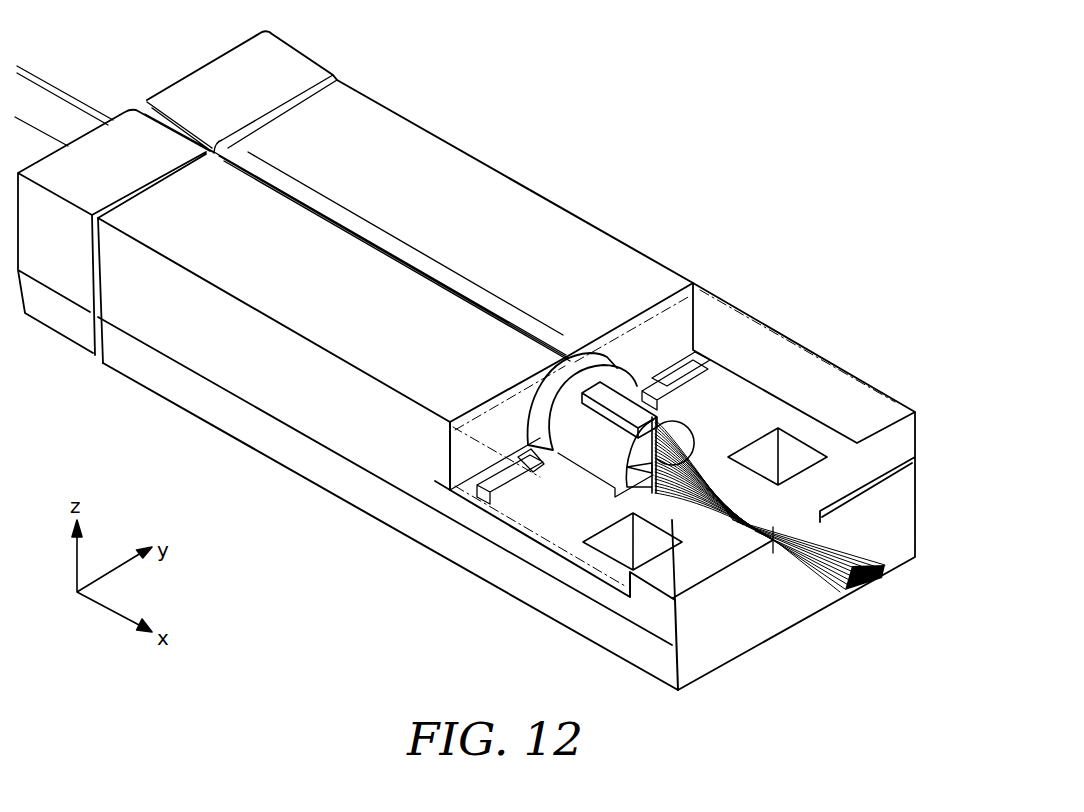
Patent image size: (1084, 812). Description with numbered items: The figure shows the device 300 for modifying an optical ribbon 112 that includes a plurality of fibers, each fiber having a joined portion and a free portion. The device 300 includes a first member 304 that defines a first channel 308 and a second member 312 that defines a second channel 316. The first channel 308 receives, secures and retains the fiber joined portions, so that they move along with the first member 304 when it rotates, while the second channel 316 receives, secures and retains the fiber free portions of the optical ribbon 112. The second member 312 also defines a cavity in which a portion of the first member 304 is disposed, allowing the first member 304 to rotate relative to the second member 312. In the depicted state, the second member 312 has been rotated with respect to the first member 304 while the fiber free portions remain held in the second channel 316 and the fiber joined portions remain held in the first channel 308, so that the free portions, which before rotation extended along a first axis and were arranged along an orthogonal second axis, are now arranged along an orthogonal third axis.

The device 300 is at (577, 78).
The second member 312 is at (580, 263).
The first member 304 is at (672, 440).
The second channel 316 is at (832, 512).
The first channel 308 is at (640, 462).
The optical ribbon 112 is at (833, 588).